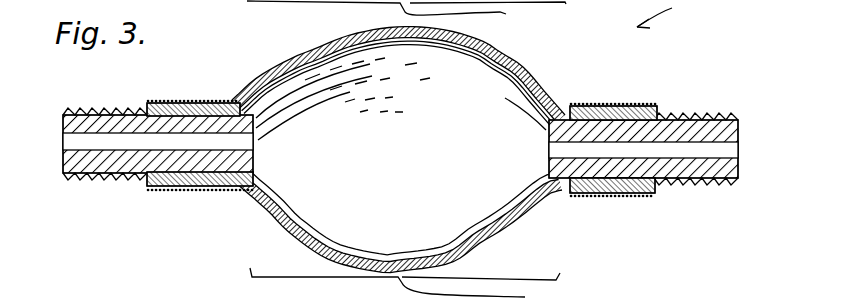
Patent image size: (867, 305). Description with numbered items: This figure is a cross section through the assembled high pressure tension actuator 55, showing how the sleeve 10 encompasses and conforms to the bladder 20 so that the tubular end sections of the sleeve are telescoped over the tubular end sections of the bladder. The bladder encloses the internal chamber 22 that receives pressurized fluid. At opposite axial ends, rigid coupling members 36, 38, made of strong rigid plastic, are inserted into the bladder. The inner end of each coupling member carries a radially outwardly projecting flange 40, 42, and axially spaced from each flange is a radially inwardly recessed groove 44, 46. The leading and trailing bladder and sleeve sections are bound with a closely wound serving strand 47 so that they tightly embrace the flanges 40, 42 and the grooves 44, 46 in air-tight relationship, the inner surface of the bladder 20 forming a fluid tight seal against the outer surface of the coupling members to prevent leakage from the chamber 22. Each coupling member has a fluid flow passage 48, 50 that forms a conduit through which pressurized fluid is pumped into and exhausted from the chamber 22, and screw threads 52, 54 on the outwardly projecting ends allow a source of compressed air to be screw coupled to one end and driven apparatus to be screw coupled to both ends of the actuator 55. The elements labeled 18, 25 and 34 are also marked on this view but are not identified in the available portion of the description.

The sleeve 10 is at (426, 150).
The liner 18 is at (413, 286).
The bladder 20 is at (286, 68).
The chamber 22 is at (450, 104).
The vessel wall 25 is at (456, 254).
The fiber reinforced layer 34 is at (406, 15).
The coupling member 36 is at (136, 150).
The coupling member 38 is at (660, 163).
The flange 40 is at (258, 128).
The flange 42 is at (552, 164).
The groove 44 is at (192, 190).
The groove 46 is at (608, 196).
The serving strand 47 is at (190, 101).
The fluid flow passage 48 is at (78, 142).
The fluid flow passage 50 is at (738, 148).
The screw threads 52 is at (100, 108).
The screw threads 54 is at (712, 186).
The high pressure tension actuator 55 is at (668, 14).